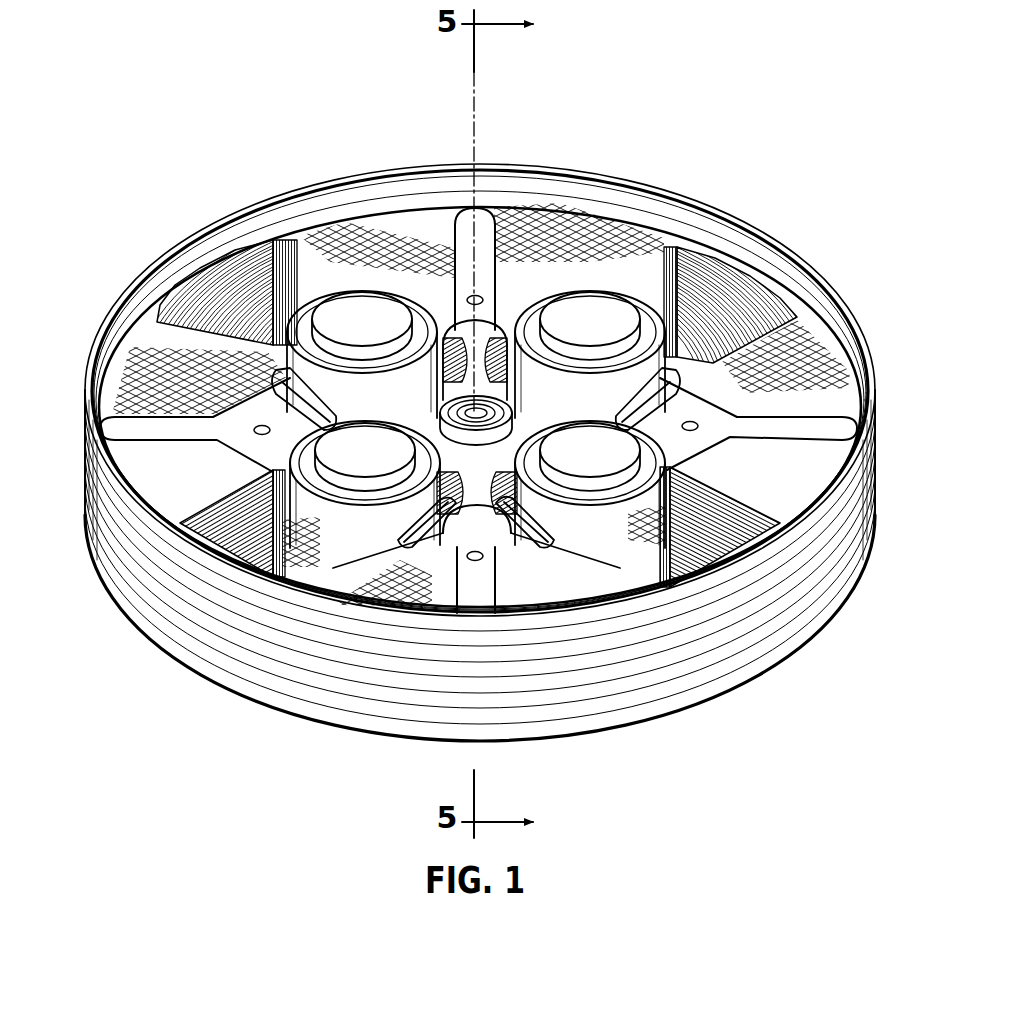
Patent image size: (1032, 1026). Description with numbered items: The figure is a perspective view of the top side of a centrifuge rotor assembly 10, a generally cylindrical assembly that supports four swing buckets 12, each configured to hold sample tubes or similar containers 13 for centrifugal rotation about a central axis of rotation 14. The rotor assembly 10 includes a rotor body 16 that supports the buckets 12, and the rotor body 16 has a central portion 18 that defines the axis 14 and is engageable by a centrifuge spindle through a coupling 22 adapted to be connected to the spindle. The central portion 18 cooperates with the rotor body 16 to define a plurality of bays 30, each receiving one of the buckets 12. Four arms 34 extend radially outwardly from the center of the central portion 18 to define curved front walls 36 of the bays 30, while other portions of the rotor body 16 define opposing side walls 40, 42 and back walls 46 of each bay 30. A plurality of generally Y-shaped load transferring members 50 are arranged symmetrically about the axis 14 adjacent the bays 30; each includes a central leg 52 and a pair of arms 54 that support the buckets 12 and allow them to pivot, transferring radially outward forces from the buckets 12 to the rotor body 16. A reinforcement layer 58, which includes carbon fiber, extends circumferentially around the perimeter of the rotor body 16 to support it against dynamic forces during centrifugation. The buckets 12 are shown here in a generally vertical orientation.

The centrifuge rotor assembly 10 is at (776, 148).
The swing bucket 12 is at (377, 288).
The container 13 is at (358, 302).
The central axis of rotation 14 is at (470, 128).
The rotor body 16 is at (558, 225).
The central portion 18 is at (484, 333).
The coupling 22 is at (437, 418).
The bay 30 is at (265, 372).
The arm 34 is at (177, 410).
The curved front wall 36 is at (517, 457).
The side wall 40 is at (289, 250).
The side wall 42 is at (183, 327).
The back wall 46 is at (233, 277).
The load transferring member 50 is at (482, 275).
The central leg 52 is at (470, 602).
The arm 54 is at (423, 520).
The reinforcement layer 58 is at (862, 527).